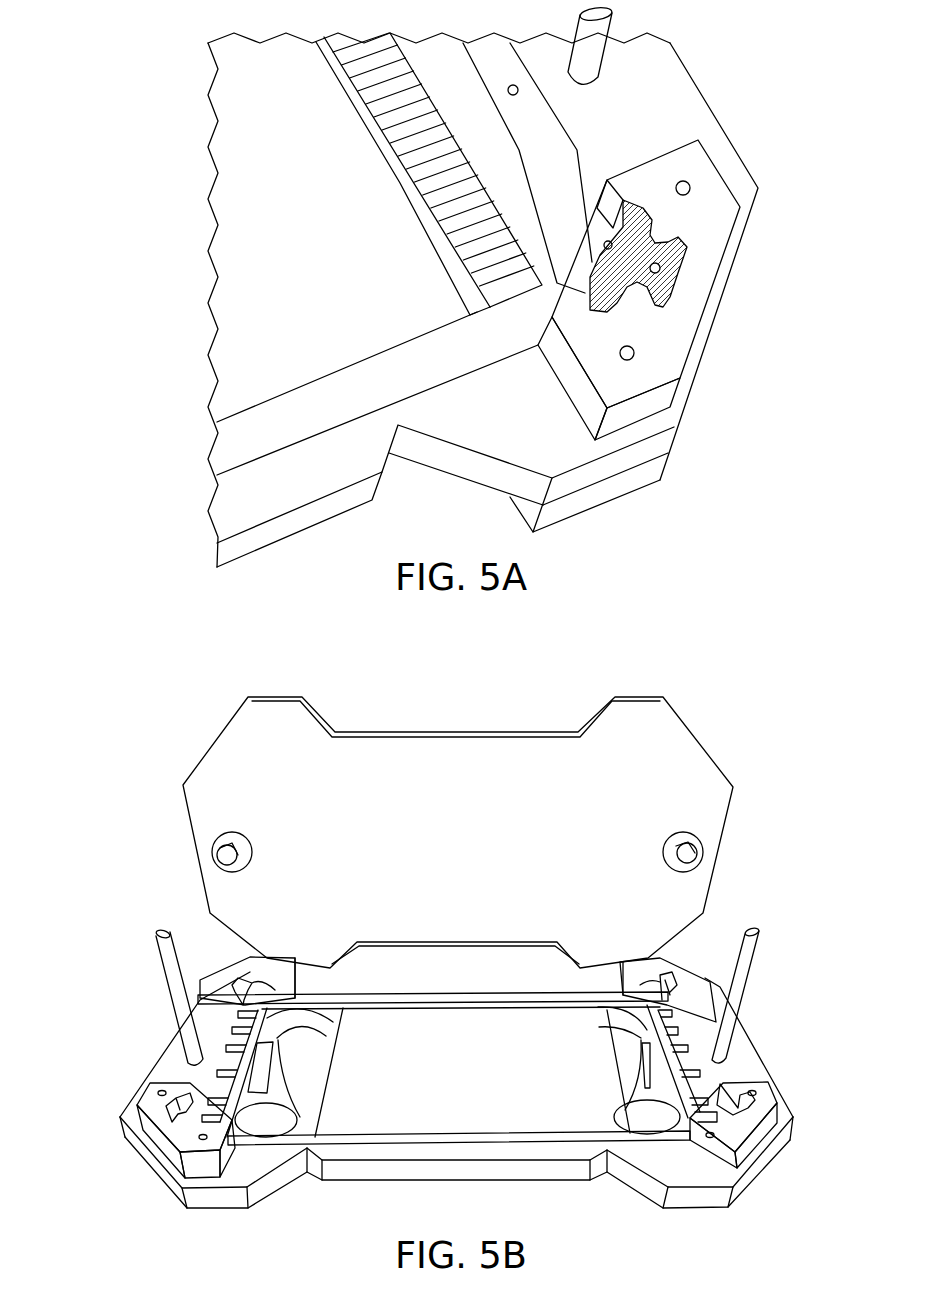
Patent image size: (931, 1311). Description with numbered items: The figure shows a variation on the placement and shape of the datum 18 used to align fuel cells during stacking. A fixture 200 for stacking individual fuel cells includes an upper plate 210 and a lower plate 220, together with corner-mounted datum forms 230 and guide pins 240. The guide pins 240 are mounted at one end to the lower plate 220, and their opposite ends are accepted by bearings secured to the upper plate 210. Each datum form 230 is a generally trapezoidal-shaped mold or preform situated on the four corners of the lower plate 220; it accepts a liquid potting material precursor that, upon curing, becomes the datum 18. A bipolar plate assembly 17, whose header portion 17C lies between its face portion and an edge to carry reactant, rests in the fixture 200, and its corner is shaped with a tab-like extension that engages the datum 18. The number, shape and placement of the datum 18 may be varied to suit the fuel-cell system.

In FIG. 5A, the bipolar plate assembly 17 is at (270, 62).
In FIG. 5B, the bipolar plate assembly 17 is at (318, 1079).
In FIG. 5A, the header portion 17C is at (505, 156).
In FIG. 5A, the datum 18 is at (642, 205).
In FIG. 5B, the datum 18 is at (460, 1047).
In FIG. 5B, the fixture 200 is at (110, 836).
In FIG. 5B, the upper plate 210 is at (688, 743).
In FIG. 5A, the lower plate 220 is at (681, 96).
In FIG. 5B, the lower plate 220 is at (690, 1203).
In FIG. 5A, the datum form 230 is at (674, 357).
In FIG. 5B, the datum form 230 is at (163, 1143).
In FIG. 5A, the guide pin 240 is at (572, 26).
In FIG. 5B, the guide pin 240 is at (740, 993).